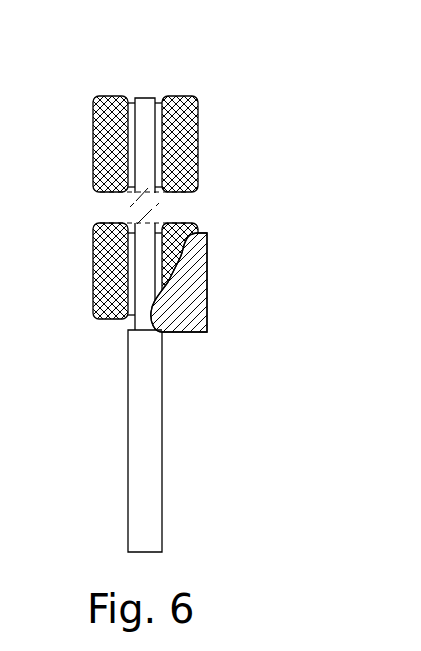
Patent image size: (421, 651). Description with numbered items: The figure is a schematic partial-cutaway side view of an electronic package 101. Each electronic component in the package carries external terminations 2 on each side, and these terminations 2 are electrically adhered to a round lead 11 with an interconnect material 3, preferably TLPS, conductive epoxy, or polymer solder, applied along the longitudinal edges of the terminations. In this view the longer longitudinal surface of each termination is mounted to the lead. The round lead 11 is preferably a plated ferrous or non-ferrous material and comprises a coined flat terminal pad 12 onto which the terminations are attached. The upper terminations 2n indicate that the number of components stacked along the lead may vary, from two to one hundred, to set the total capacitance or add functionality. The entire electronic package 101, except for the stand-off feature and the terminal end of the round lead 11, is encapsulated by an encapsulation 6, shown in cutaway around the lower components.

The electronic package 101 is at (212, 78).
The external termination 2n is at (232, 138).
The external termination 2 is at (112, 283).
The interconnect material 3 is at (130, 250).
The encapsulation 6 is at (197, 308).
The round lead 11 is at (153, 520).
The coined flat terminal pad 12 is at (145, 103).